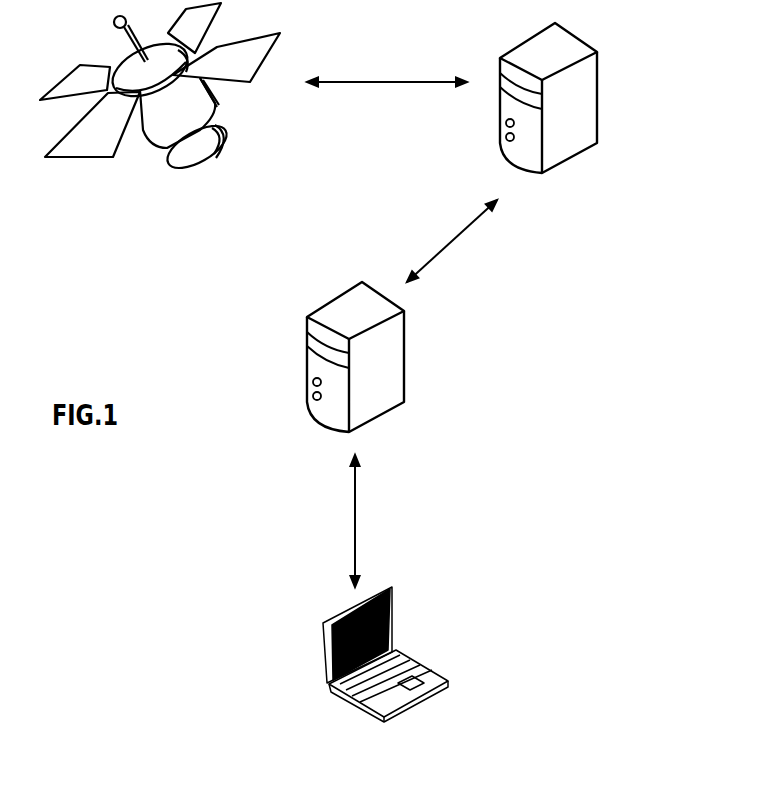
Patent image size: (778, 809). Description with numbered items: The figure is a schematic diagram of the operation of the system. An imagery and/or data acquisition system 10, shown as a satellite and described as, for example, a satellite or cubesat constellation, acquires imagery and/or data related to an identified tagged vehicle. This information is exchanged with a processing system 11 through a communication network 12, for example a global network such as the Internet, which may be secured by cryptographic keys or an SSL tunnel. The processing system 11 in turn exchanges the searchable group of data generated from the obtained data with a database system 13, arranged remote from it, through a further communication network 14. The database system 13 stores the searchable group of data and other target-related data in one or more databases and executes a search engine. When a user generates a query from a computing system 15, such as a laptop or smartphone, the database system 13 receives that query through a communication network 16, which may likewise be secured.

The imagery and/or data acquisition system 10 is at (173, 187).
The processing system 11 is at (580, 177).
The communication network 12 is at (387, 102).
The database system 13 is at (432, 350).
The communication network 14 is at (452, 241).
The computing system 15 is at (472, 653).
The communication network 16 is at (374, 521).